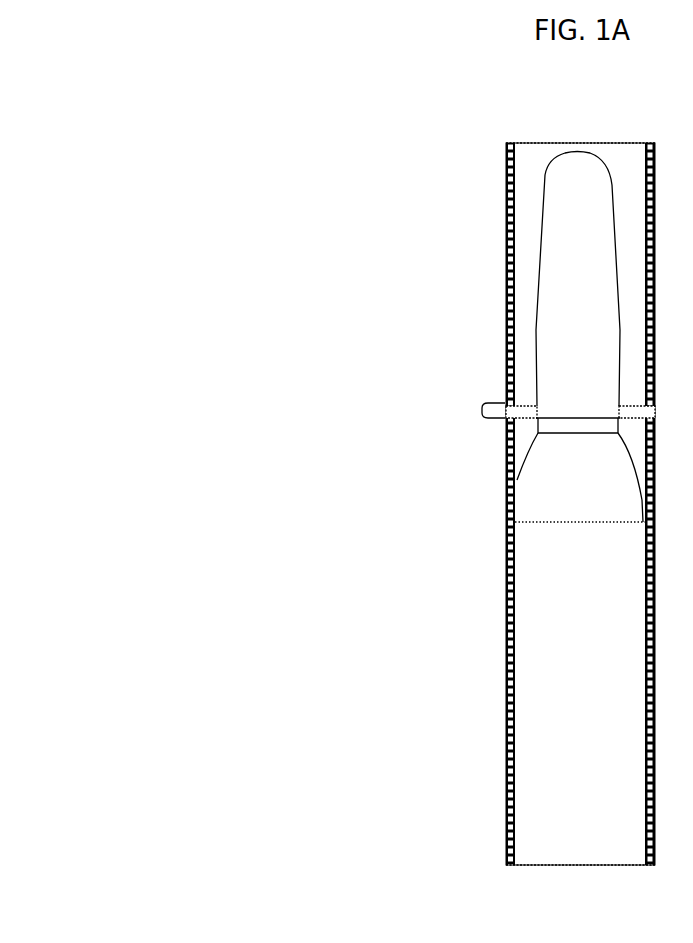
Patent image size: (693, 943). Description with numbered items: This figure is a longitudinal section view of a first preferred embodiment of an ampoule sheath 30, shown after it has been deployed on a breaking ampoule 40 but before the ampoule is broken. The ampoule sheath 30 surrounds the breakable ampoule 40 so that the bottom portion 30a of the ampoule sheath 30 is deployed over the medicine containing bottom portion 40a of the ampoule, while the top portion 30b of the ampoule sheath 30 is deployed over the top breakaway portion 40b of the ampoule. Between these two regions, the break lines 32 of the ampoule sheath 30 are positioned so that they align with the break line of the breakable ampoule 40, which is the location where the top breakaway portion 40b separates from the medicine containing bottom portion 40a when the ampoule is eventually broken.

The ampoule sheath 30 is at (234, 263).
The bottom portion of the ampoule sheath 30a is at (507, 615).
The top portion of the ampoule sheath 30b is at (510, 157).
The break lines 32 is at (482, 410).
The breaking ampoule 40 is at (545, 468).
The medicine containing bottom portion of the ampoule 40a is at (548, 495).
The top breakaway portion of the ampoule 40b is at (553, 236).